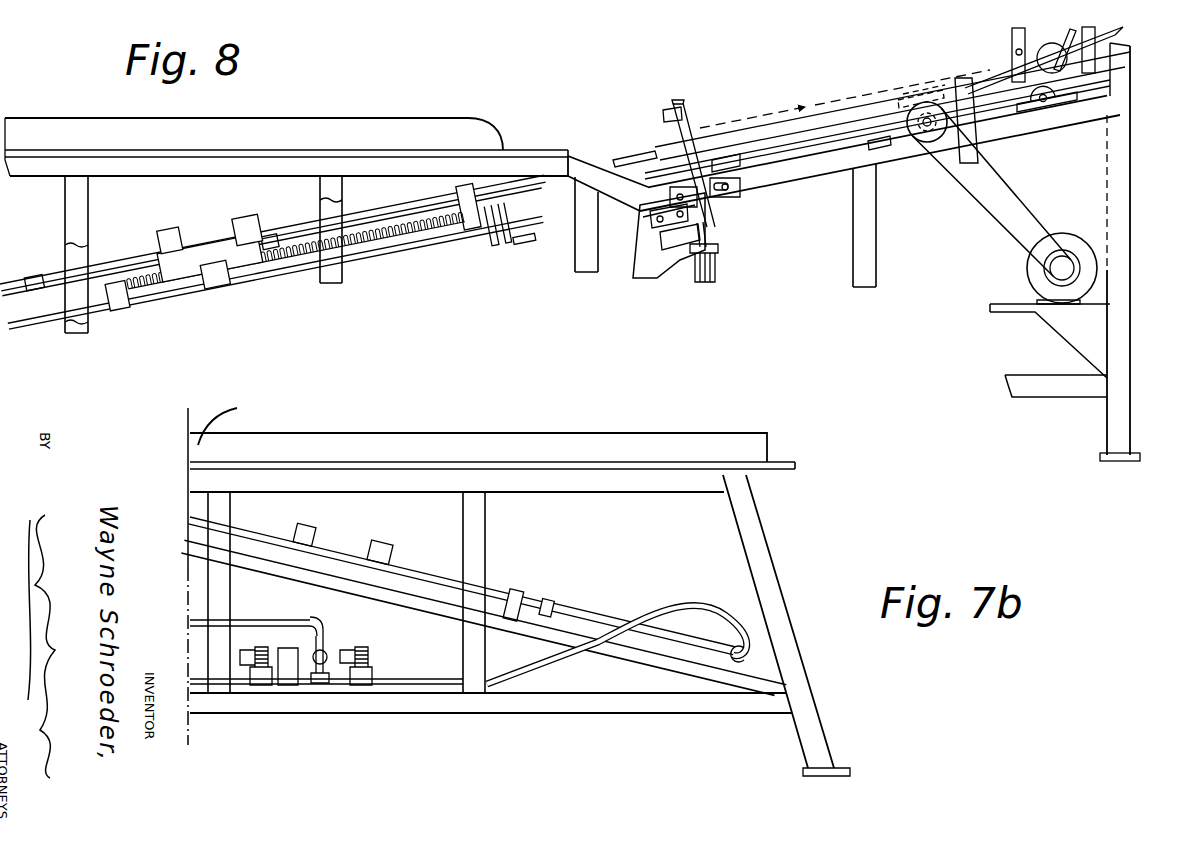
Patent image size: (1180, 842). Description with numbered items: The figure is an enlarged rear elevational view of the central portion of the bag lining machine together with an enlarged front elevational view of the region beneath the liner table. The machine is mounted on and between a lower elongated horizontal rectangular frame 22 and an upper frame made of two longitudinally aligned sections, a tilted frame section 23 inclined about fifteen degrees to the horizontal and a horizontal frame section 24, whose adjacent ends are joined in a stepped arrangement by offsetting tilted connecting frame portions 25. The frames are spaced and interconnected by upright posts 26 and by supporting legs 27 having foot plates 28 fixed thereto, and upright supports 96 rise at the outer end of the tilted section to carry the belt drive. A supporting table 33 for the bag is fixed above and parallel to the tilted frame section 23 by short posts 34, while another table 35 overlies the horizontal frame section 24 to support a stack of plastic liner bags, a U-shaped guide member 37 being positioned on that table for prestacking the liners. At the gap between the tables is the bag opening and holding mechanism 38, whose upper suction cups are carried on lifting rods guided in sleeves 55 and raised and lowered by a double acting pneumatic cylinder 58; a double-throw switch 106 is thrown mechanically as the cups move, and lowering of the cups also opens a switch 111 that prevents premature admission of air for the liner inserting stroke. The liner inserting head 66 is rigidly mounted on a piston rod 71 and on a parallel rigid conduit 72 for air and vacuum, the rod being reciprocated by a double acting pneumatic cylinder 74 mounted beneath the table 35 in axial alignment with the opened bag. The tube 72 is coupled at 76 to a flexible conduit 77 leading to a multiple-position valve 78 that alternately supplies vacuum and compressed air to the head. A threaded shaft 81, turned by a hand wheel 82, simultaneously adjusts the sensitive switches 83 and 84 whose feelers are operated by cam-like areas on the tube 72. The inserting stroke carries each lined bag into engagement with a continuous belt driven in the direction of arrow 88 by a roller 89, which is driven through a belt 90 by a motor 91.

In FIG. 7B, the lower frame 22 is at (447, 700).
In FIG. 8, the tilted frame section 23 is at (828, 170).
In FIG. 8, the horizontal frame section 24 is at (43, 167).
In FIG. 7B, the horizontal frame section 24 is at (643, 490).
In FIG. 8, the connecting frame portions 25 is at (590, 163).
In FIG. 8, the upright posts 26 is at (65, 216).
In FIG. 7B, the upright posts 26 is at (223, 513).
In FIG. 8, the supporting legs 27 is at (1123, 153).
In FIG. 7B, the supporting legs 27 is at (758, 547).
In FIG. 8, the foot plates 28 is at (1107, 453).
In FIG. 7B, the foot plates 28 is at (805, 768).
In FIG. 8, the supporting table 33 is at (760, 143).
In FIG. 8, the short posts 34 is at (741, 161).
In FIG. 8, the table 35 is at (263, 153).
In FIG. 7B, the table 35 is at (787, 472).
In FIG. 8, the U-shaped guide member 37 is at (375, 130).
In FIG. 7B, the U-shaped guide member 37 is at (232, 443).
In FIG. 8, the bag opening and holding mechanism 38 is at (694, 102).
In FIG. 8, the sleeves 55 is at (669, 235).
In FIG. 8, the double acting pneumatic cylinder 58 is at (715, 279).
In FIG. 8, the head 66 is at (636, 148).
In FIG. 8, the piston rod 71 is at (812, 115).
In FIG. 8, the rigid conduit 72 is at (15, 285).
In FIG. 7B, the rigid conduit 72 is at (577, 620).
In FIG. 8, the double acting pneumatic cylinder 74 is at (37, 304).
In FIG. 7B, the double acting pneumatic cylinder 74 is at (413, 582).
In FIG. 7B, the coupling 76 is at (746, 651).
In FIG. 7B, the flexible conduit 77 is at (688, 603).
In FIG. 7B, the multiple-position valve 78 is at (372, 672).
In FIG. 8, the threaded shaft 81 is at (275, 265).
In FIG. 8, the hand wheel 82 is at (521, 252).
In FIG. 8, the sensitive switch 83 is at (243, 220).
In FIG. 7B, the sensitive switch 83 is at (308, 537).
In FIG. 8, the sensitive switch 84 is at (163, 237).
In FIG. 7B, the sensitive switch 84 is at (380, 553).
In FIG. 8, the arrow 88 is at (1125, 29).
In FIG. 8, the roller 89 is at (1050, 45).
In FIG. 8, the belt 90 is at (1010, 203).
In FIG. 8, the motor 91 is at (1077, 250).
In FIG. 8, the upright support 96 is at (1012, 59).
In FIG. 8, the double-throw switch 106 is at (732, 198).
In FIG. 8, the switch 111 is at (652, 220).